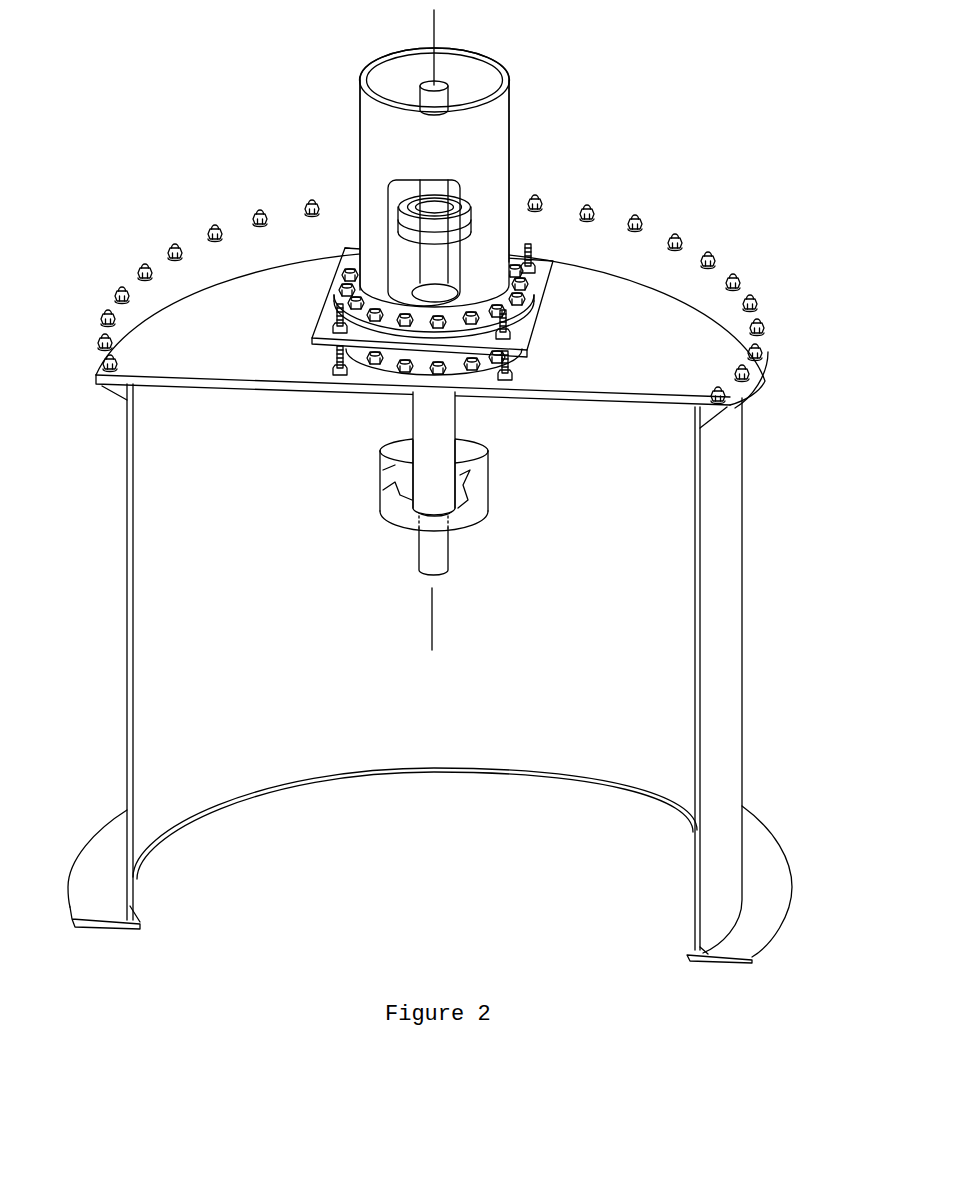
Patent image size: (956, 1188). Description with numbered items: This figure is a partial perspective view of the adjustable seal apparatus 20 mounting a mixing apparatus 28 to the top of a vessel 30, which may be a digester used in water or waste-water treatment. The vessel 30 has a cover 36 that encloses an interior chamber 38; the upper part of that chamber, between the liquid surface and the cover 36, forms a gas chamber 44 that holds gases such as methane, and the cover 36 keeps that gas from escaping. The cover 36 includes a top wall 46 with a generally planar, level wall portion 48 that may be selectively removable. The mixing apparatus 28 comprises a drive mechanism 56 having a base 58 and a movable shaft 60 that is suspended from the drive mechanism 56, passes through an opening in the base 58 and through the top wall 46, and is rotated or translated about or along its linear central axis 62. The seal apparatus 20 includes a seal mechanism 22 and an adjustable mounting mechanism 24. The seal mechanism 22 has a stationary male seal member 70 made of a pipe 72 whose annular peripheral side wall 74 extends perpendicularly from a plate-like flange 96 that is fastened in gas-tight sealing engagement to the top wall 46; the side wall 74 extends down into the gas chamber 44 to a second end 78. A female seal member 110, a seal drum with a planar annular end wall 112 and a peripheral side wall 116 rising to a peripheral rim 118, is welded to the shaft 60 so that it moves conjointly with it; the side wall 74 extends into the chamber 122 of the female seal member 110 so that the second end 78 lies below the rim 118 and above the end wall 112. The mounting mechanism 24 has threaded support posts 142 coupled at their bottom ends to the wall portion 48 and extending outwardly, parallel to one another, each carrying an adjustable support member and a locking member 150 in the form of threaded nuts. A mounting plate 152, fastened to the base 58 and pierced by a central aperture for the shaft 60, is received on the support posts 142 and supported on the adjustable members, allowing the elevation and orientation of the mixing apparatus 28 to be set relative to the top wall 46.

The adjustable seal apparatus 20 is at (284, 287).
The seal mechanism 22 is at (458, 501).
The adjustable mounting mechanism 24 is at (428, 302).
The mixing apparatus 28 is at (483, 158).
The vessel 30 is at (800, 396).
The cover 36 is at (775, 495).
The interior chamber 38 is at (673, 740).
The gas chamber 44 is at (668, 652).
The top wall 46 is at (722, 307).
The planar wall portion 48 is at (683, 278).
The drive mechanism 56 is at (515, 128).
The base 58 is at (520, 314).
The movable shaft 60 is at (450, 553).
The linear central axis 62 is at (437, 31).
The male seal member 70 is at (452, 453).
The pipe 72 is at (410, 413).
The annular peripheral side wall 74 is at (458, 425).
The second end 78 is at (462, 512).
The flange 96 is at (390, 362).
The female seal member 110 is at (458, 501).
The annular end wall 112 is at (404, 528).
The peripheral side wall 116 is at (489, 494).
The peripheral rim 118 is at (388, 447).
The chamber 122 is at (397, 466).
The threaded support post 142 is at (535, 252).
The locking member 150 is at (518, 337).
The mounting plate 152 is at (545, 276).